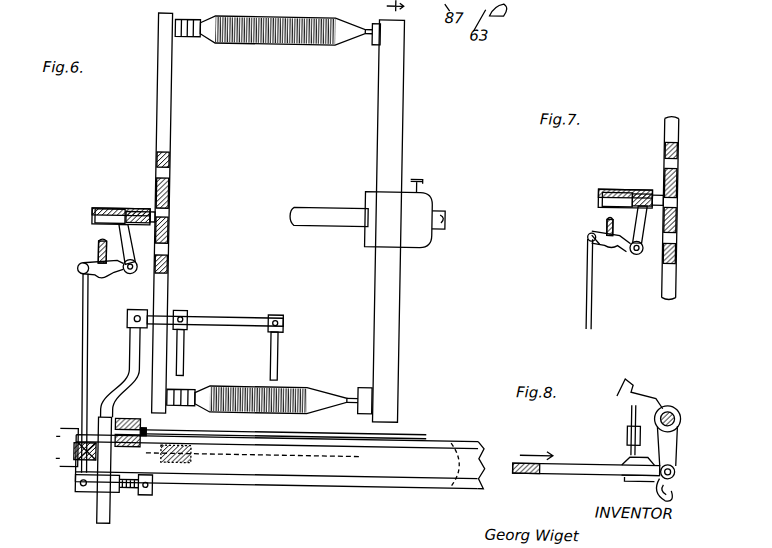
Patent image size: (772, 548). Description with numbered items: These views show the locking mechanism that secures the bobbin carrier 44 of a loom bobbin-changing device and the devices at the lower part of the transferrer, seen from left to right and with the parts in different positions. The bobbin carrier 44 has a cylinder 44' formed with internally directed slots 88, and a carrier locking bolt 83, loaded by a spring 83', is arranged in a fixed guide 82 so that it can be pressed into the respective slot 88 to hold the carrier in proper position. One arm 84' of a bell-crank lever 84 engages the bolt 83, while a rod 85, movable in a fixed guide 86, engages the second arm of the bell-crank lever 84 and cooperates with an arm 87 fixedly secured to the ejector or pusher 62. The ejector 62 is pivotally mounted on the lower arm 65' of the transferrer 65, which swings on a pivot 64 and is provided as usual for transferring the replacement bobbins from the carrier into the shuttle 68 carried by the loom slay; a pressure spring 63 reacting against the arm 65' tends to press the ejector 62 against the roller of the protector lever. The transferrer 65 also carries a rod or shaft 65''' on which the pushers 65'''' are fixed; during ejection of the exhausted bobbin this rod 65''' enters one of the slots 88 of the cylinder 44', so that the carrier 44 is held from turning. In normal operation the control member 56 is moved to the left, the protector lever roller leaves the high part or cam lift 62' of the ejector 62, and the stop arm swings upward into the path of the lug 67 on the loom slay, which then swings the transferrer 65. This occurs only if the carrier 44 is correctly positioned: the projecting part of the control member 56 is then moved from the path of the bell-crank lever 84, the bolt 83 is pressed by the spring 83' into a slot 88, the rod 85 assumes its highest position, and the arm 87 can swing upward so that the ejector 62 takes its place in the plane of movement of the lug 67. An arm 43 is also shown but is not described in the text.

In FIG. 6, the arm 43 is at (300, 216).
In FIG. 6, the bobbin carrier 44 is at (414, 221).
In FIG. 7, the bobbin carrier 44 is at (693, 208).
In FIG. 6, the cylinder 44' is at (189, 213).
In FIG. 6, the control member 56 is at (98, 249).
In FIG. 7, the control member 56 is at (605, 225).
In FIG. 8, the ejector or pusher 62 is at (587, 454).
In FIG. 8, the high part of the ejector 62' is at (624, 449).
In FIG. 8, the pressure spring 63 is at (652, 489).
In FIG. 6, the pivot 64 is at (134, 414).
In FIG. 8, the pivot 64 is at (672, 414).
In FIG. 6, the transferrer 65 is at (119, 416).
In FIG. 8, the transferrer 65 is at (643, 378).
In FIG. 8, the lower arm of the transferrer 65' is at (695, 453).
In FIG. 6, the rod or shaft of the transferrer 65''' is at (215, 304).
In FIG. 6, the pushers 65'''' is at (256, 345).
In FIG. 8, the lug on the loom slay 67 is at (533, 442).
In FIG. 6, the shuttle 68 is at (426, 441).
In FIG. 6, the fixed guide 82 is at (110, 211).
In FIG. 7, the fixed guide 82 is at (606, 192).
In FIG. 6, the carrier locking bolt 83 is at (139, 200).
In FIG. 7, the carrier locking bolt 83 is at (686, 190).
In FIG. 6, the spring 83' is at (91, 203).
In FIG. 7, the spring 83' is at (619, 182).
In FIG. 6, the bell-crank lever 84 is at (115, 282).
In FIG. 7, the bell-crank lever 84 is at (610, 262).
In FIG. 6, the arm of the bell-crank lever 84' is at (171, 249).
In FIG. 7, the arm of the bell-crank lever 84' is at (676, 231).
In FIG. 6, the rod 85 is at (83, 343).
In FIG. 7, the rod 85 is at (588, 310).
In FIG. 8, the rod 85 is at (628, 420).
In FIG. 6, the fixed guide 86 is at (70, 448).
In FIG. 8, the fixed guide 86 is at (626, 435).
In FIG. 6, the arm 87 is at (80, 497).
In FIG. 8, the arm 87 is at (625, 477).
In FIG. 6, the slots 88 is at (170, 212).
In FIG. 7, the slots 88 is at (677, 208).